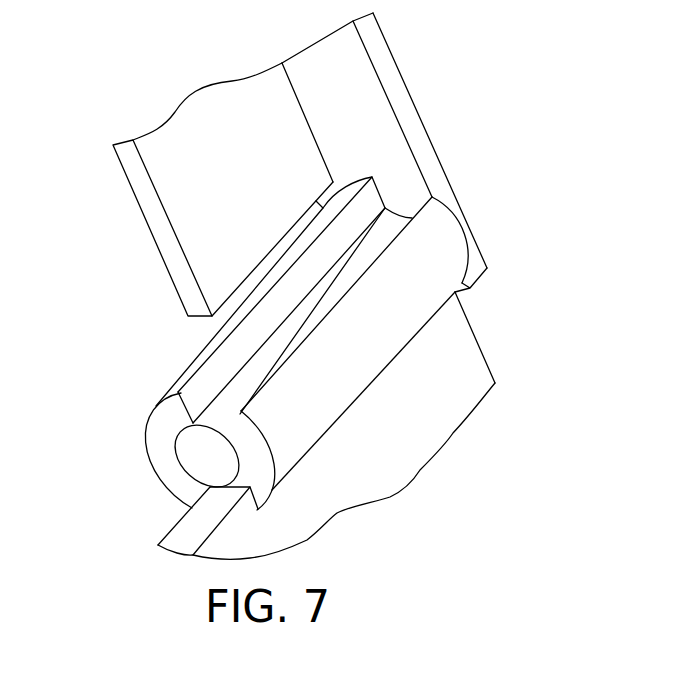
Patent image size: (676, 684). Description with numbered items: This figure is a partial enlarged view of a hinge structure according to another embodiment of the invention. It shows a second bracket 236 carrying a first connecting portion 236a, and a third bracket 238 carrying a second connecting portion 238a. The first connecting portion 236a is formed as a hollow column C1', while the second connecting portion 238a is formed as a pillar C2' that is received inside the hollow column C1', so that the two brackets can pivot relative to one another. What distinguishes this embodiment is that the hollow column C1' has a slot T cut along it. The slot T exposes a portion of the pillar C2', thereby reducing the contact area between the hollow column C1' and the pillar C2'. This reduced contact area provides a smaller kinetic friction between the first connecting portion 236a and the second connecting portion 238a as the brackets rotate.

The second bracket 236 is at (438, 412).
The first connecting portion 236a is at (449, 343).
The third bracket 238 is at (198, 218).
The second connecting portion 238a is at (153, 461).
The slot T is at (321, 279).
The hollow column C1' is at (469, 193).
The pillar C2' is at (165, 420).